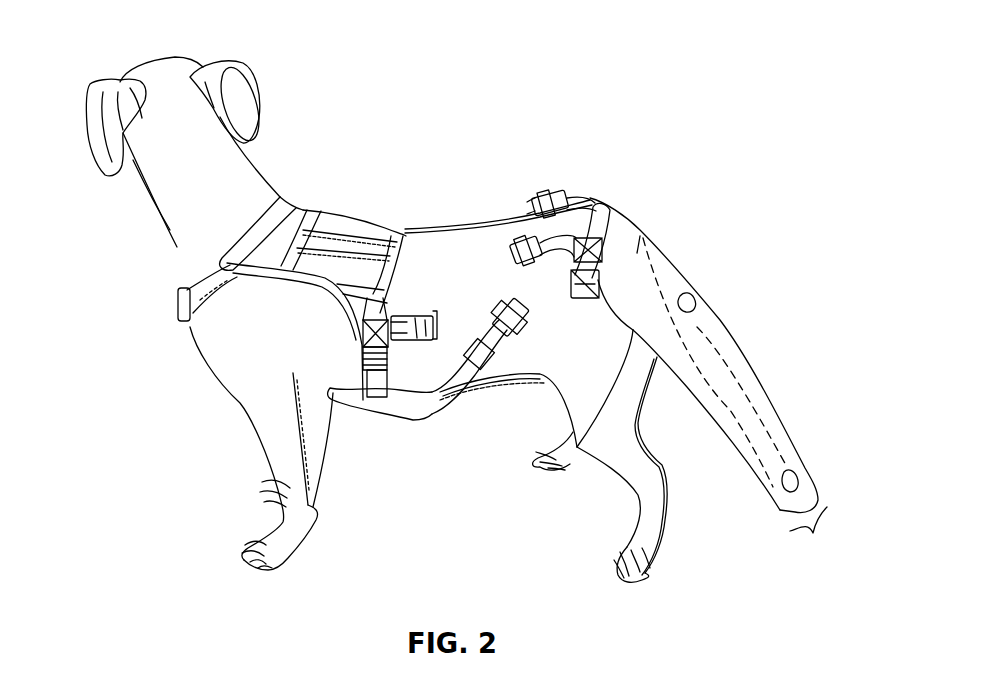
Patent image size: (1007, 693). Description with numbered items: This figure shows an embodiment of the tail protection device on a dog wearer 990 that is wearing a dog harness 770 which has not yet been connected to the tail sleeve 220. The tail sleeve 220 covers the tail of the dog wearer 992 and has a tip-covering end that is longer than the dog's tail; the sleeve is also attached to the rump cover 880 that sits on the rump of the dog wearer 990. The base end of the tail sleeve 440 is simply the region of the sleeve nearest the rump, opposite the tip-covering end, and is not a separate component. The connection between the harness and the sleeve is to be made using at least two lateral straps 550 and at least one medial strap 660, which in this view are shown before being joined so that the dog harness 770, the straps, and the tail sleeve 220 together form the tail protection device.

The dog wearer 990 is at (156, 41).
The dog harness 770 is at (407, 227).
The lateral straps 550 is at (520, 247).
The rump cover 880 is at (640, 240).
The medial strap 660 is at (582, 300).
The base end of tail sleeve 440 is at (558, 343).
The tail of the dog wearer 992 is at (707, 333).
The tail sleeve 220 is at (813, 533).